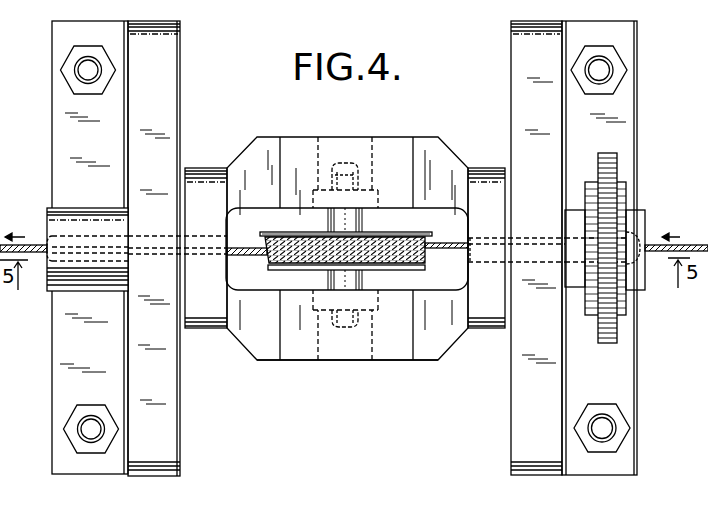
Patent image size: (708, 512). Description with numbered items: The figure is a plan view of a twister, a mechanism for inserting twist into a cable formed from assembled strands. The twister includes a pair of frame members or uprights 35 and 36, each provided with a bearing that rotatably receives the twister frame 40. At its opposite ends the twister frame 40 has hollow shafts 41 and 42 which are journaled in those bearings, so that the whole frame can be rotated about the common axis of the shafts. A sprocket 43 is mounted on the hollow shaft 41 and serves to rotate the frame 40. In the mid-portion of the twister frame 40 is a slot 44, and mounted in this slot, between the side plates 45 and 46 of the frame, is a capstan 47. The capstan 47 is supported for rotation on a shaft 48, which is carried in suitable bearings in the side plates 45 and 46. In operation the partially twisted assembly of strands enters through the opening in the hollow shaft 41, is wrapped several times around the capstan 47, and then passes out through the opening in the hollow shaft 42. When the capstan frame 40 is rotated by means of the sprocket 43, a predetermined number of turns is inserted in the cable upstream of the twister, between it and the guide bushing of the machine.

The upright 35 is at (172, 88).
The upright 36 is at (517, 87).
The twister frame 40 is at (440, 140).
The hollow shaft 41 is at (638, 222).
The hollow shaft 42 is at (62, 222).
The sprocket 43 is at (614, 168).
The slot 44 is at (458, 272).
The side plate 45 is at (346, 138).
The side plate 46 is at (345, 356).
The capstan 47 is at (396, 236).
The shaft 48 is at (337, 277).